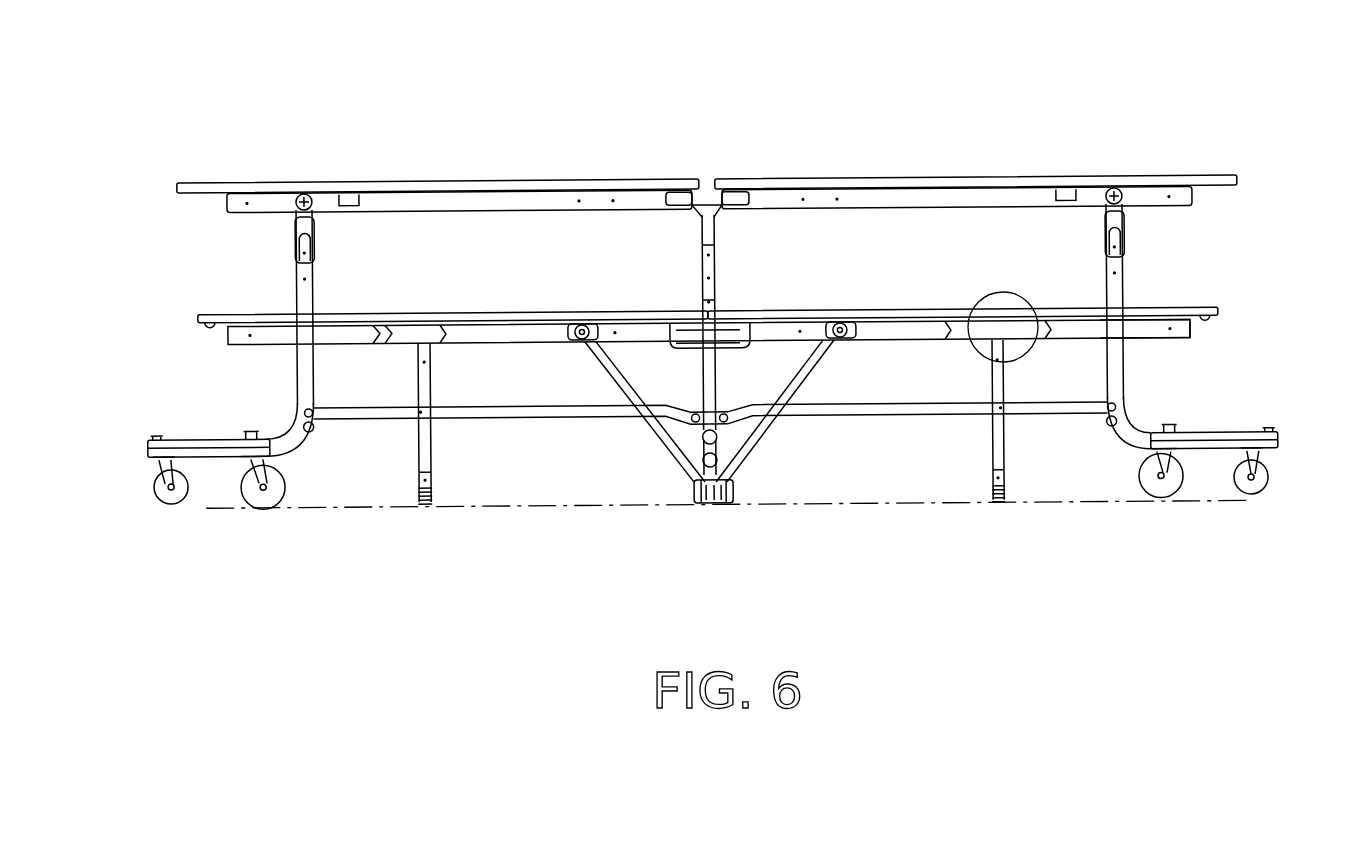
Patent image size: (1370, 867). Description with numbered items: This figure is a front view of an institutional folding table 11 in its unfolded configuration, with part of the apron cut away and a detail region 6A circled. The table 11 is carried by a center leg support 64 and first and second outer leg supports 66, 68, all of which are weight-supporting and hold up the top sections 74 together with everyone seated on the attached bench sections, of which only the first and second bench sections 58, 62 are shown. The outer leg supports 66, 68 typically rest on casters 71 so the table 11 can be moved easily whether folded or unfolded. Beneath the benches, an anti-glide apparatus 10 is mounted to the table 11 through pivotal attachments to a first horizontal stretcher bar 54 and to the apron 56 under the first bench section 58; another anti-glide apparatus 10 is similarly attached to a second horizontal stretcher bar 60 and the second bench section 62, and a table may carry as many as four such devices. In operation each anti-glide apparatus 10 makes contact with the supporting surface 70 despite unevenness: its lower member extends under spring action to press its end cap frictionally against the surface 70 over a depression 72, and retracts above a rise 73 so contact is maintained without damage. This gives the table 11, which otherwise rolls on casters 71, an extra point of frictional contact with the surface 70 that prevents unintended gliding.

The institutional folding table 11 is at (545, 147).
The detail area 6A is at (1003, 292).
The anti-glide apparatus 10 is at (417, 457).
The first horizontal stretcher bar 54 is at (497, 412).
The apron 56 is at (1180, 330).
The first bench section 58 is at (215, 318).
The second horizontal stretcher bar 60 is at (880, 405).
The second bench section 62 is at (1185, 312).
The center leg support 64 is at (714, 235).
The first outer leg support 66 is at (295, 372).
The second outer leg support 68 is at (1128, 388).
The surface 70 is at (817, 505).
The casters 71 is at (247, 502).
The depression 72 is at (995, 505).
The rise 73 is at (433, 508).
The top sections 74 is at (323, 188).